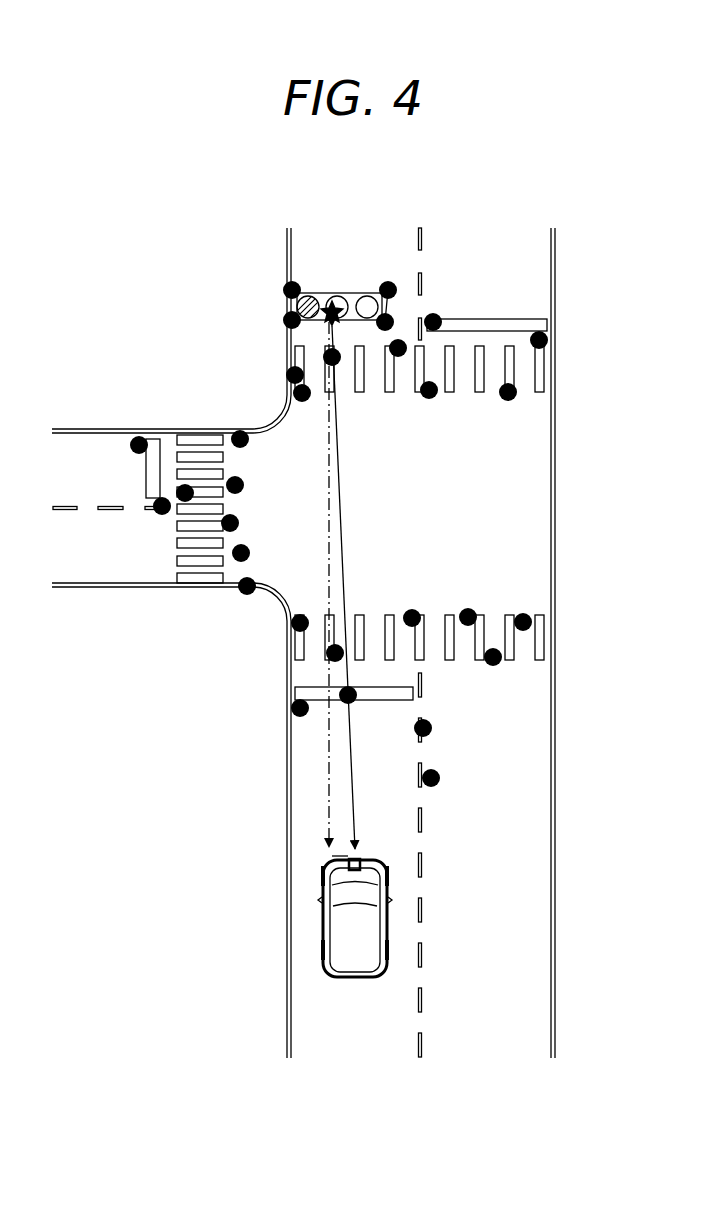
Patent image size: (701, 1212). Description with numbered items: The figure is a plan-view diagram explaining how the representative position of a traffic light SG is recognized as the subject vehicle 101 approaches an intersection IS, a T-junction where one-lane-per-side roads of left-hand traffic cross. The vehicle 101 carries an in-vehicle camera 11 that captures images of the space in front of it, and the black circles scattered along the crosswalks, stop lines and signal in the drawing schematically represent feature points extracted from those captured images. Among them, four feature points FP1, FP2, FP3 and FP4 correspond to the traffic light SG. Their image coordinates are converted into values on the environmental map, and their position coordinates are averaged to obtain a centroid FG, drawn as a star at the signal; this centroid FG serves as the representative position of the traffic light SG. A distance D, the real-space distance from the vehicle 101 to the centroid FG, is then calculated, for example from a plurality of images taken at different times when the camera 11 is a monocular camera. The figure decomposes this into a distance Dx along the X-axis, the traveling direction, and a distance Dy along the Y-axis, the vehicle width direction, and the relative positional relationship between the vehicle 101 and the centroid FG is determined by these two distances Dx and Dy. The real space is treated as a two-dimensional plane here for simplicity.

The feature point FP1 is at (292, 290).
The feature point FP2 is at (292, 320).
The feature point FP3 is at (388, 290).
The feature point FP4 is at (385, 322).
The centroid FG is at (331, 300).
The traffic light SG is at (355, 291).
The intersection IS is at (530, 497).
The distance D is at (343, 550).
The distance in X-axis direction Dx is at (327, 800).
The distance in Y-axis direction Dy is at (342, 852).
The camera 11 is at (357, 858).
The vehicle 101 is at (353, 977).